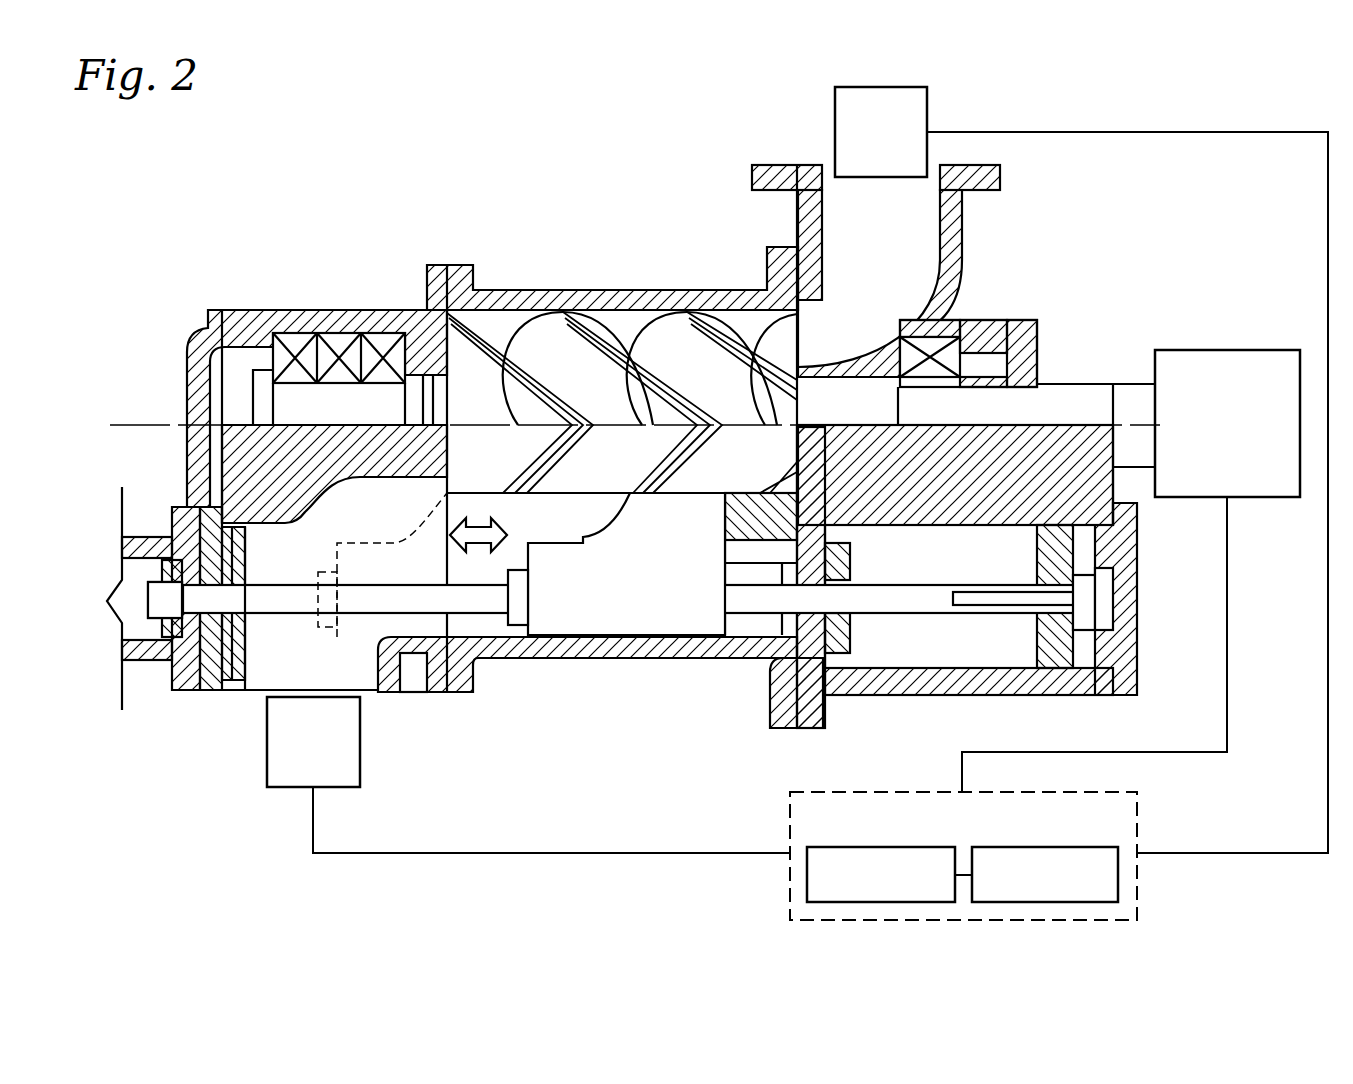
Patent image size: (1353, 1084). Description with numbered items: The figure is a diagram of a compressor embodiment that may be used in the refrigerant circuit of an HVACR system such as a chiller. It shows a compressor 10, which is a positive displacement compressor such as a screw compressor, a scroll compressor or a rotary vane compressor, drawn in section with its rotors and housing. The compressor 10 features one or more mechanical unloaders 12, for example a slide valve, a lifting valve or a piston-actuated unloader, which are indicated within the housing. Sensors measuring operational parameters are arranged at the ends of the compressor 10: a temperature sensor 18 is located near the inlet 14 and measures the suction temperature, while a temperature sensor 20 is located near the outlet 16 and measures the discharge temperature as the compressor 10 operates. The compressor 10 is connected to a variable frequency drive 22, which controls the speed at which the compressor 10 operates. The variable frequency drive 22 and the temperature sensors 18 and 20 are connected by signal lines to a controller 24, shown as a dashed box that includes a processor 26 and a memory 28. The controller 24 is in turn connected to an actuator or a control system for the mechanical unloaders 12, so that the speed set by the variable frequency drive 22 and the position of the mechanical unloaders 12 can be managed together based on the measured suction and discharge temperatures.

The compressor 10 is at (443, 160).
The mechanical unloaders 12 is at (363, 543).
The inlet 14 is at (852, 233).
The outlet 16 is at (288, 660).
The temperature sensor 18 is at (905, 87).
The temperature sensor 20 is at (290, 787).
The variable frequency drive 22 is at (1190, 350).
The controller 24 is at (1137, 822).
The processor 26 is at (840, 902).
The memory 28 is at (1083, 902).